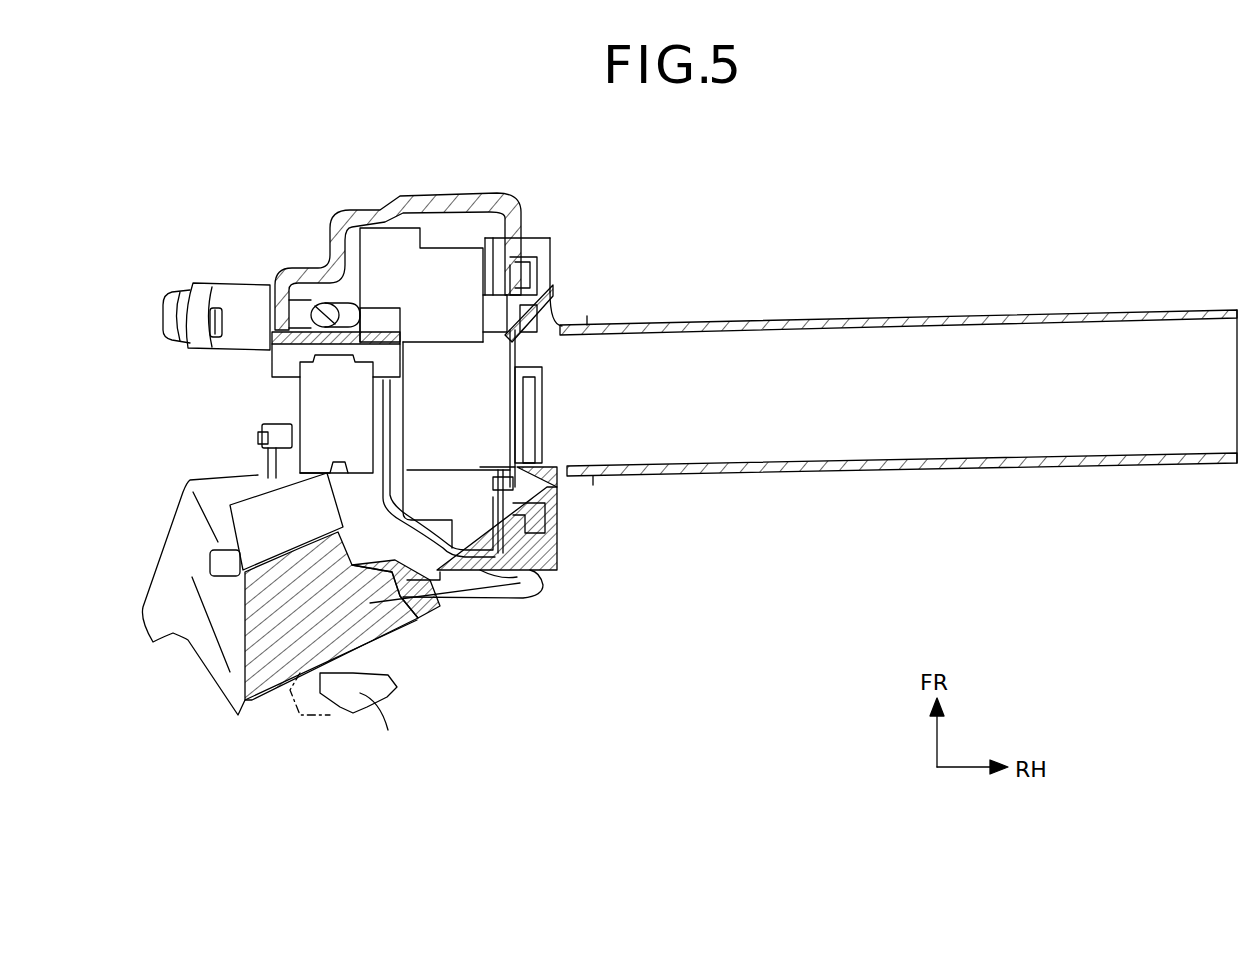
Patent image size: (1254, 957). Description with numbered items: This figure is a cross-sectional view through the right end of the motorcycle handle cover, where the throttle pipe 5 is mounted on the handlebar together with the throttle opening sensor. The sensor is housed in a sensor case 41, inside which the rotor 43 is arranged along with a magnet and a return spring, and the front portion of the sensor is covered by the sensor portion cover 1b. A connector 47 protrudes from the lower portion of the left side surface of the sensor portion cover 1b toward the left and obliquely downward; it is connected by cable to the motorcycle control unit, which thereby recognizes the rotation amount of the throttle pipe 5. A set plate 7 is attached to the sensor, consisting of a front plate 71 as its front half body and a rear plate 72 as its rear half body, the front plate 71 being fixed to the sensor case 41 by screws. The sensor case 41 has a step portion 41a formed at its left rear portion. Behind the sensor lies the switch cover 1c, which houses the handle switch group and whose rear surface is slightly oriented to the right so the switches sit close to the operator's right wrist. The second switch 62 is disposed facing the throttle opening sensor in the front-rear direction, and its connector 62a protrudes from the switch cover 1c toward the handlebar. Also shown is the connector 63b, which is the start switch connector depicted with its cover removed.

The throttle pipe 5 is at (952, 410).
The sensor portion cover 1b is at (455, 207).
The switch cover 1c is at (517, 585).
The rotor 43 is at (487, 373).
The connector 47 is at (233, 300).
The front plate 71 is at (272, 365).
The set plate 7 is at (262, 391).
The rear plate 72 is at (346, 435).
The connector 63b is at (262, 445).
The second switch 62 is at (373, 697).
The connector 62a is at (300, 537).
The sensor case 41 is at (488, 568).
The step portion 41a is at (432, 560).